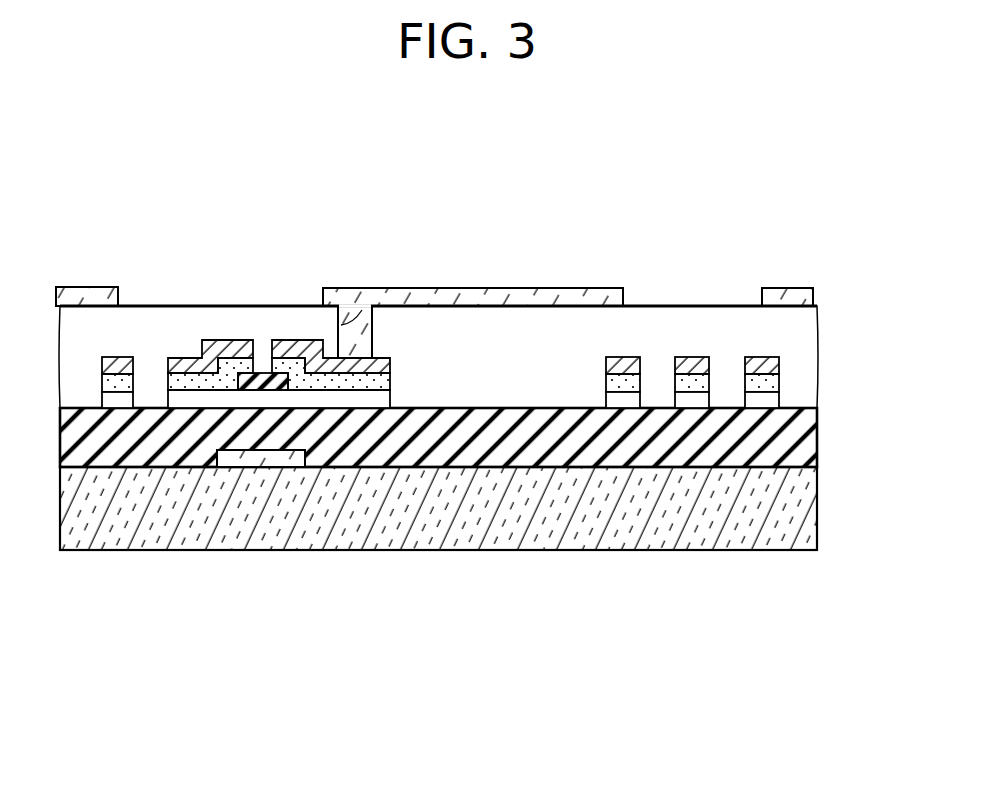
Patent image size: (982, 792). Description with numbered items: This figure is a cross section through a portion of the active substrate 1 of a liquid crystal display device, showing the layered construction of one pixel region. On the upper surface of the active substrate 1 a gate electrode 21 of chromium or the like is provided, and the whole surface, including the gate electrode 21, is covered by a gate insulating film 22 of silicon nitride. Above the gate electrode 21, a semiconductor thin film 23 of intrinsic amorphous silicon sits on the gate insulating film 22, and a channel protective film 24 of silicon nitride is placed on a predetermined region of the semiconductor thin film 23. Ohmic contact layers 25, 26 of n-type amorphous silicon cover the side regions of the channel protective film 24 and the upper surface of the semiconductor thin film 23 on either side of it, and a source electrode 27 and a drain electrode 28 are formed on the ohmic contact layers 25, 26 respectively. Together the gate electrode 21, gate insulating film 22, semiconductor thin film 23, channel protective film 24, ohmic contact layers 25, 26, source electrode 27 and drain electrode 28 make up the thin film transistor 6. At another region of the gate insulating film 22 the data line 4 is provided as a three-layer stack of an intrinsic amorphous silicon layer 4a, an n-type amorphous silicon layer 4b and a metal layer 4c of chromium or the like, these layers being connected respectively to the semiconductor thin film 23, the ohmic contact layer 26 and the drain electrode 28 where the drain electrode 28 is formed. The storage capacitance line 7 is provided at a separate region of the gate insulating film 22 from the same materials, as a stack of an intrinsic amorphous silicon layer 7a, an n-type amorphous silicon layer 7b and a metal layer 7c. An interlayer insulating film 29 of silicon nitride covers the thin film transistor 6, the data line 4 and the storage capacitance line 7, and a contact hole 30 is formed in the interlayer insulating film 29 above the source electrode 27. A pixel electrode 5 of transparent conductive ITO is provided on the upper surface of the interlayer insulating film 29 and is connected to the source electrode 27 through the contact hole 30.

The active substrate 1 is at (802, 512).
The data line 4 is at (458, 395).
The intrinsic amorphous silicon layer 4a is at (682, 395).
The n-type amorphous silicon layer 4b is at (690, 380).
The metal layer 4c is at (702, 367).
The pixel electrode 5 is at (88, 297).
The thin film transistor 6 is at (265, 332).
The storage capacitance line 7 is at (440, 444).
The intrinsic amorphous silicon layer 7a is at (615, 403).
The n-type amorphous silicon layer 7b is at (623, 385).
The metal layer 7c is at (633, 367).
The gate electrode 21 is at (243, 463).
The gate insulating film 22 is at (800, 436).
The semiconductor thin film 23 is at (338, 397).
The channel protective film 24 is at (262, 383).
The ohmic contact layer 25 is at (368, 383).
The ohmic contact layer 26 is at (210, 385).
The source electrode 27 is at (300, 340).
The drain electrode 28 is at (235, 340).
The interlayer insulating film 29 is at (800, 330).
The contact hole 30 is at (358, 330).